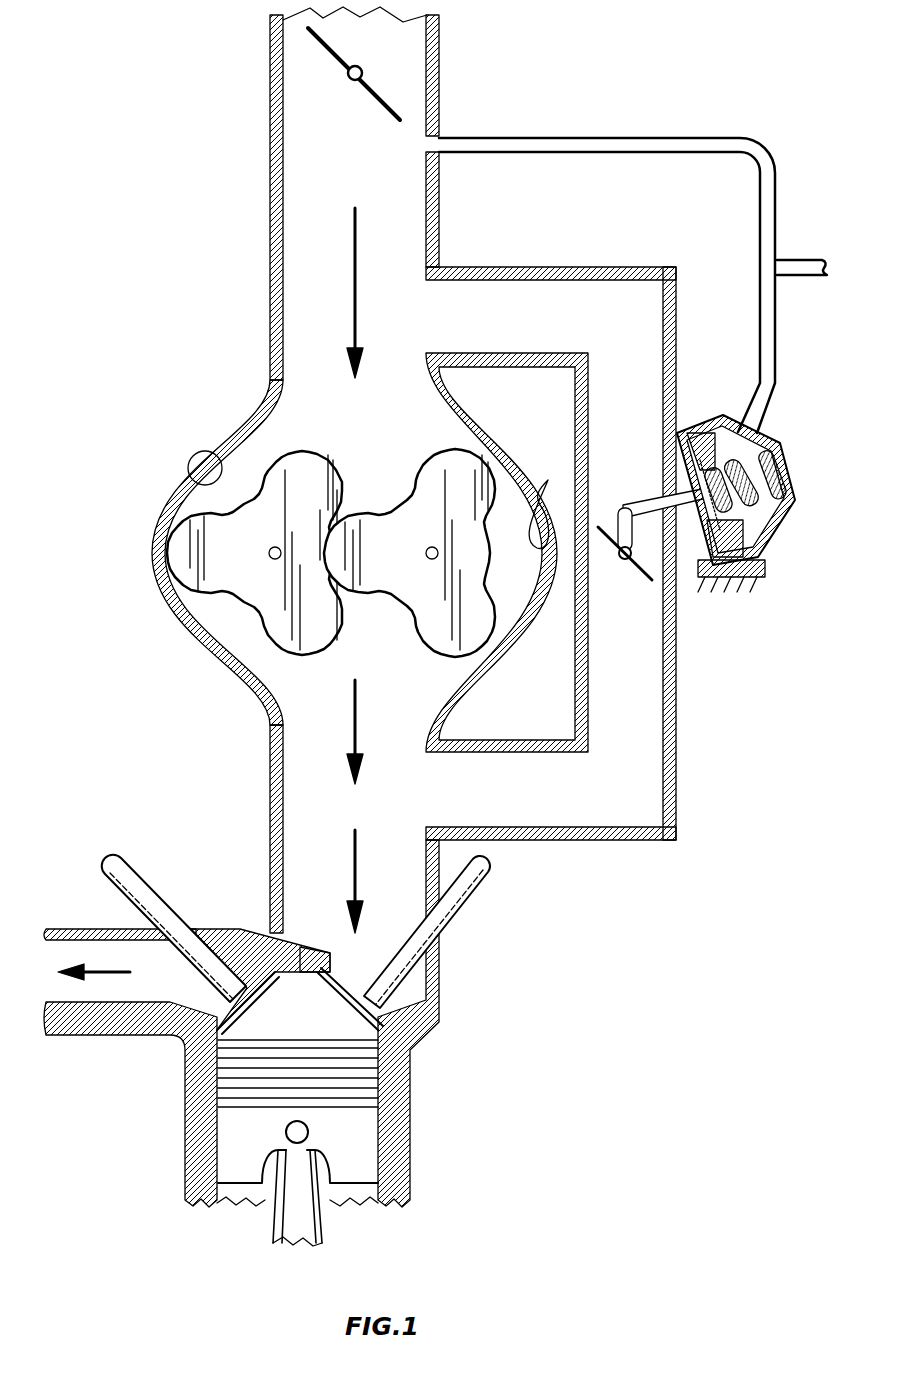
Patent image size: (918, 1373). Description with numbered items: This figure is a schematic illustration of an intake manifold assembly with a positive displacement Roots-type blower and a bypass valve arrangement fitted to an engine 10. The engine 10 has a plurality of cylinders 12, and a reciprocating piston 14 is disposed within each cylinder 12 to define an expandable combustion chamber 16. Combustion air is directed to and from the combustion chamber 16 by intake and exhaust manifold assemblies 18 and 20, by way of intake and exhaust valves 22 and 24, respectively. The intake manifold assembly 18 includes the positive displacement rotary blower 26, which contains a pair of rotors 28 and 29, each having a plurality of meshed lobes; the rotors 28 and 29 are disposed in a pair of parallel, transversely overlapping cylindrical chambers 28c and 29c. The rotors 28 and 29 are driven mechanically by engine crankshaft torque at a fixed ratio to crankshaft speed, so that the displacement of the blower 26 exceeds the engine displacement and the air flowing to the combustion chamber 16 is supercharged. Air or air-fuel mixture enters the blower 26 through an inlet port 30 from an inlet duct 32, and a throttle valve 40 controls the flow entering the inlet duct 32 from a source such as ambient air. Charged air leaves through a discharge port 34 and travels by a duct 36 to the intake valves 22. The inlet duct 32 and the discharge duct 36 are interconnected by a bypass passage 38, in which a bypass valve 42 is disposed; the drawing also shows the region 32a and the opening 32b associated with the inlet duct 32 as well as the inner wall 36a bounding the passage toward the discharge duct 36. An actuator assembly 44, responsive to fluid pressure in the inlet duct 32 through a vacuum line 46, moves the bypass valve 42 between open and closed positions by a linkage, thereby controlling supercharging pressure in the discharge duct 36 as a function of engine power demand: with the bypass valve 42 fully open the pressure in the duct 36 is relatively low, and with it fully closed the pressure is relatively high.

The engine 10 is at (285, 1043).
The cylinder 12 is at (377, 1113).
The reciprocating piston 14 is at (353, 1160).
The combustion chamber 16 is at (311, 1026).
The intake manifold assembly 18 is at (306, 496).
The exhaust manifold assembly 20 is at (80, 928).
The intake valve 22 is at (473, 890).
The exhaust valve 24 is at (148, 880).
The positive displacement rotary blower 26 is at (147, 507).
The rotor 28 is at (250, 597).
The cylindrical chamber 28c is at (218, 456).
The rotor 29 is at (407, 593).
The cylindrical chamber 29c is at (548, 480).
The inlet port 30 is at (330, 400).
The inlet duct 32 is at (342, 132).
The bypass passage 32a is at (483, 310).
The bypass opening 32b is at (427, 146).
The discharge port 34 is at (322, 705).
The discharge duct 36 is at (323, 867).
The inner chamber wall 36a is at (487, 782).
The bypass passage 38 is at (638, 700).
The throttle valve 40 is at (330, 52).
The bypass valve 42 is at (643, 580).
The actuator assembly 44 is at (805, 453).
The vacuum line 46 is at (668, 138).